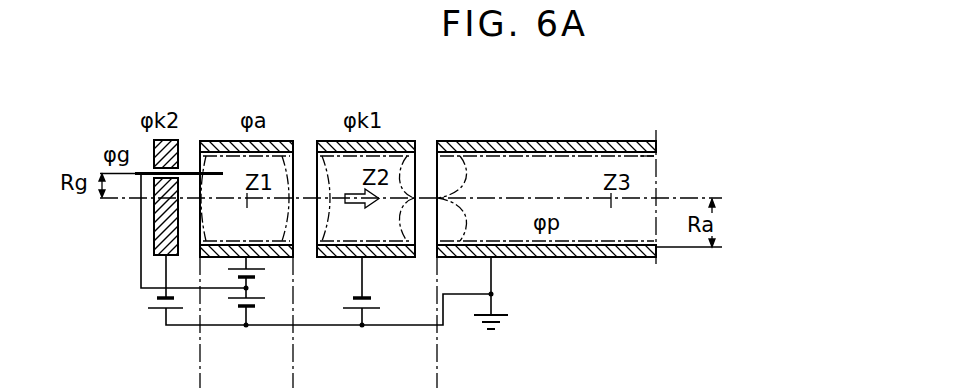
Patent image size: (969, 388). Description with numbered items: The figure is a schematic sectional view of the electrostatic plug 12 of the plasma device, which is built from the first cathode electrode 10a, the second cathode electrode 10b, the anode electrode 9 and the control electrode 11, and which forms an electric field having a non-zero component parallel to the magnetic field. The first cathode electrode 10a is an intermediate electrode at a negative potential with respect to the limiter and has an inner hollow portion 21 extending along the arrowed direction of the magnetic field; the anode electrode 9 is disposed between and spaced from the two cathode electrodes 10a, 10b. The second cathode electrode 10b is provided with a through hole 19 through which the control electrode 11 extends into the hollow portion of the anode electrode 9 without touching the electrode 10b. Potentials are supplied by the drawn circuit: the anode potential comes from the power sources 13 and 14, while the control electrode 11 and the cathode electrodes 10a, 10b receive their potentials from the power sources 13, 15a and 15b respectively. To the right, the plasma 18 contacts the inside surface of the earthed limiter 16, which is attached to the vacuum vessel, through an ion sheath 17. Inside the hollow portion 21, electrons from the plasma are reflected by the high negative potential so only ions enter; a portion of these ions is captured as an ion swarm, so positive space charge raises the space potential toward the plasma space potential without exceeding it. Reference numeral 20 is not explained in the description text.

The anode electrode 9 is at (223, 141).
The first cathode electrode 10a is at (397, 141).
The second cathode electrode 10b is at (152, 150).
The control electrode 11 is at (188, 170).
The electrostatic plug 12 is at (58, 120).
The power source 13 is at (233, 307).
The power source 14 is at (257, 277).
The power source 15a is at (380, 303).
The power source 15b is at (148, 299).
The limiter 16 is at (490, 141).
The ion sheath 17 is at (548, 157).
The plasma 18 is at (643, 167).
The through hole 19 is at (142, 177).
The lens field curve 20 is at (282, 163).
The hollow portion 21 is at (333, 160).